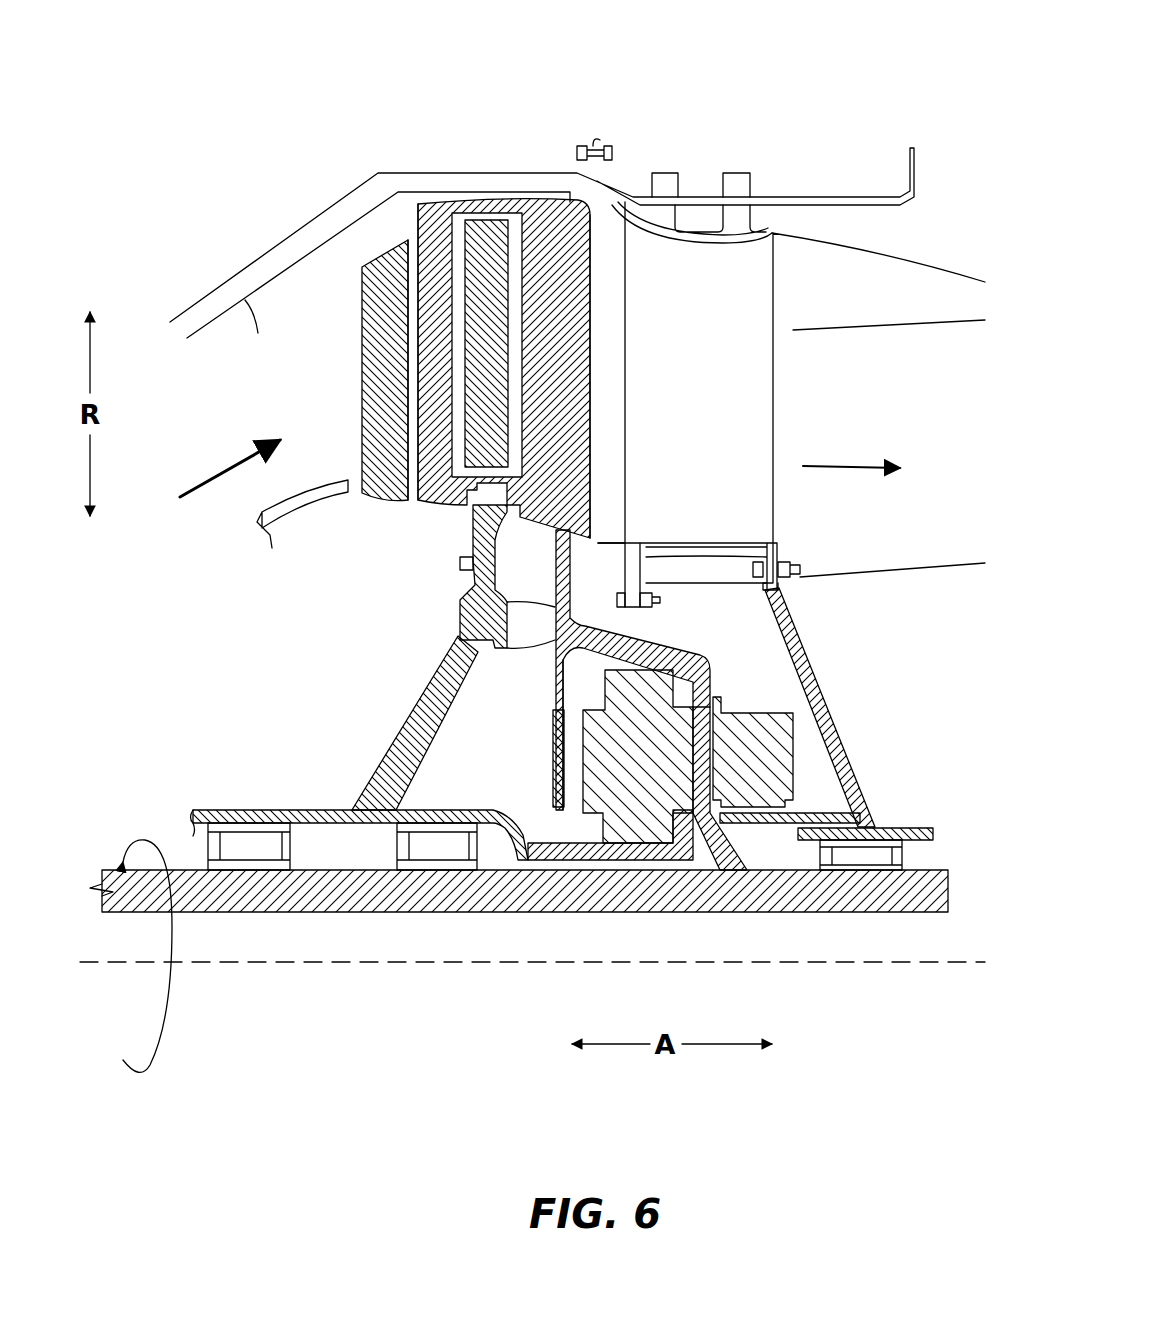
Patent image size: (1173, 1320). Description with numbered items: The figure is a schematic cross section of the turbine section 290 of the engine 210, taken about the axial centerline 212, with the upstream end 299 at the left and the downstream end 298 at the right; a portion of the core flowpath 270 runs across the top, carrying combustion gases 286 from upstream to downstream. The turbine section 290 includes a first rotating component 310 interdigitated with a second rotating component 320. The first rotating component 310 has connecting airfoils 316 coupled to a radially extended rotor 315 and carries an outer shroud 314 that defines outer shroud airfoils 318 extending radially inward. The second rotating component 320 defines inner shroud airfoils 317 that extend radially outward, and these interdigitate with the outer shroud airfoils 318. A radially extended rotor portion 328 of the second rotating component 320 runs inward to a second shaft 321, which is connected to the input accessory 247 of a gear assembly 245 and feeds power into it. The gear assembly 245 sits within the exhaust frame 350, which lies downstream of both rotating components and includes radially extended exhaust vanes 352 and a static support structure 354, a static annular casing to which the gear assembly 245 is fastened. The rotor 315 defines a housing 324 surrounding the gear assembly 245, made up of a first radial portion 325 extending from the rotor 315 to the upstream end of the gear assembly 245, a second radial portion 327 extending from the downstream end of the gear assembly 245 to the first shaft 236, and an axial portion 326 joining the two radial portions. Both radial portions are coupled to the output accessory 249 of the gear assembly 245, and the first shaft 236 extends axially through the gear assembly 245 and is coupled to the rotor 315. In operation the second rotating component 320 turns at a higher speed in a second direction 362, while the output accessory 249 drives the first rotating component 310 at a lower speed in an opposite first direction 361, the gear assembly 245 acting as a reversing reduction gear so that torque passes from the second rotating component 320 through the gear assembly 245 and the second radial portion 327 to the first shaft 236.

The engine 210 is at (787, 65).
The axial centerline 212 is at (845, 963).
The first shaft 236 is at (948, 887).
The gear assembly 245 is at (676, 677).
The input accessory 247 is at (598, 835).
The output accessory 249 is at (740, 699).
The core flowpath 270 is at (225, 378).
The combustion gases 286 is at (237, 468).
The turbine section 290 is at (375, 152).
The downstream end 298 is at (934, 663).
The upstream end 299 is at (117, 695).
The first rotating component 310 is at (590, 335).
The outer shroud 314 is at (440, 202).
The rotor 315 is at (563, 652).
The connecting airfoils 316 is at (625, 430).
The inner shroud airfoils 317 is at (372, 385).
The outer shroud airfoils 318 is at (417, 302).
The second rotating component 320 is at (477, 485).
The second shaft 321 is at (307, 805).
The housing 324 is at (600, 600).
The first radial portion 325 is at (563, 690).
The axial portion 326 is at (653, 633).
The second radial portion 327 is at (705, 684).
The rotor portion 328 is at (430, 687).
The exhaust frame 350 is at (740, 400).
The exhaust vanes 352 is at (707, 345).
The static support structure 354 is at (812, 663).
The first direction 361 is at (172, 995).
The second direction 362 is at (475, 803).